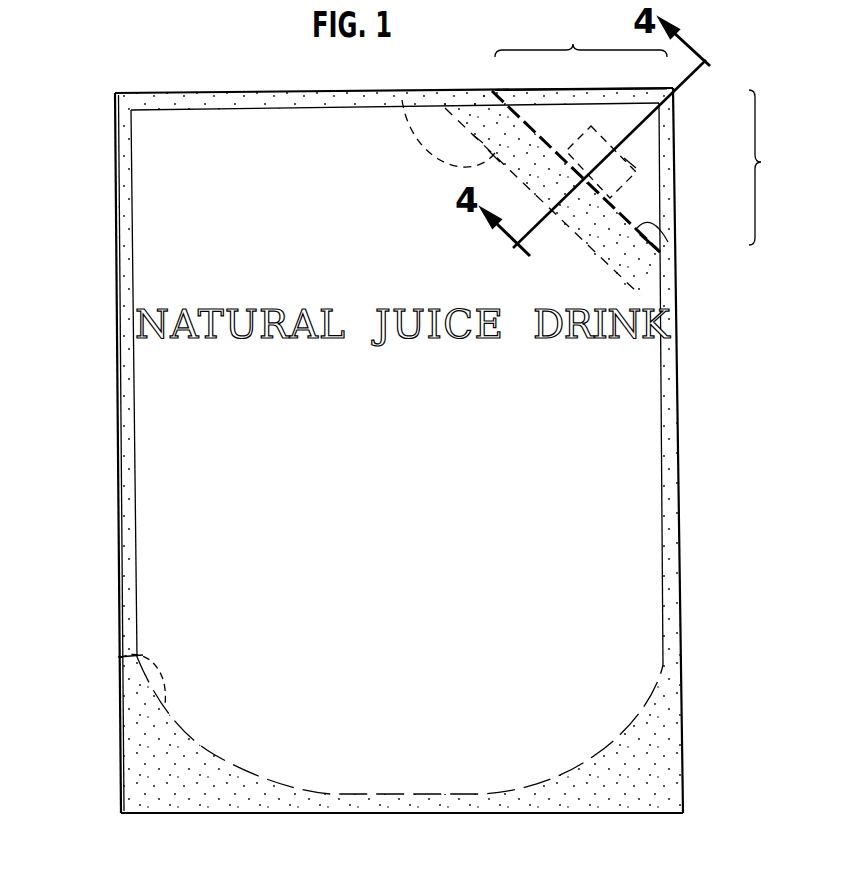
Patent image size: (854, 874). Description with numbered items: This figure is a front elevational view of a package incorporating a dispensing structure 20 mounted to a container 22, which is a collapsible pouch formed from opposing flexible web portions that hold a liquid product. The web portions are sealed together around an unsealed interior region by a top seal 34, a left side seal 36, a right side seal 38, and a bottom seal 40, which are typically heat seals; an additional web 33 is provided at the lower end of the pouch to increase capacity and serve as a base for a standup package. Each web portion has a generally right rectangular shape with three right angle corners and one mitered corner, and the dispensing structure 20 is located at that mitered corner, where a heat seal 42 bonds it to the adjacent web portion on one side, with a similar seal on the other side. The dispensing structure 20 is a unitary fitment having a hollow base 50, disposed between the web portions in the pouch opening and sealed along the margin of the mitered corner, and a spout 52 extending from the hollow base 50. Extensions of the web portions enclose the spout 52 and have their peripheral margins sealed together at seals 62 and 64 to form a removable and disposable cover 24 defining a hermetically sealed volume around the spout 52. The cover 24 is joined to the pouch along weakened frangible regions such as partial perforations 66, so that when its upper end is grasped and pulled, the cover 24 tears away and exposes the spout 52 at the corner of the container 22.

The dispensing structure 20 is at (643, 201).
The container 22 is at (102, 256).
The cover 24 is at (647, 132).
The additional web 33 is at (120, 658).
The top seal 34 is at (200, 100).
The left side seal 36 is at (124, 568).
The right side seal 38 is at (672, 435).
The bottom seal 40 is at (172, 812).
The heat seal 42 is at (508, 137).
The hollow base 50 is at (402, 100).
The spout 52 is at (632, 163).
The seal 62 is at (582, 97).
The seal 64 is at (673, 133).
The perforations 66 is at (662, 252).